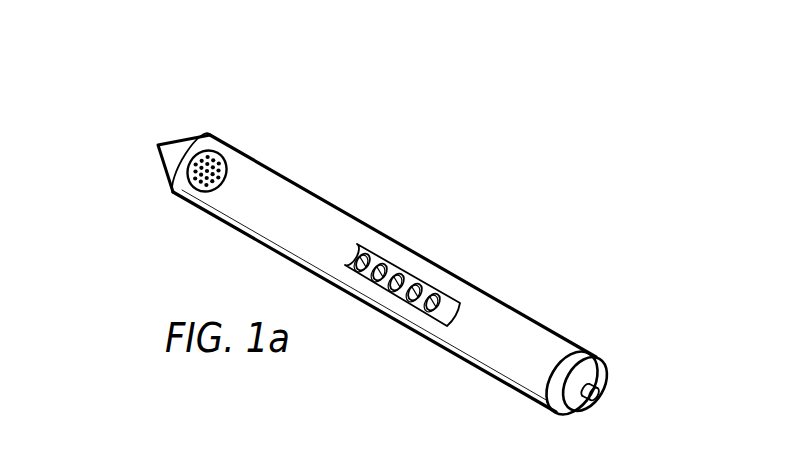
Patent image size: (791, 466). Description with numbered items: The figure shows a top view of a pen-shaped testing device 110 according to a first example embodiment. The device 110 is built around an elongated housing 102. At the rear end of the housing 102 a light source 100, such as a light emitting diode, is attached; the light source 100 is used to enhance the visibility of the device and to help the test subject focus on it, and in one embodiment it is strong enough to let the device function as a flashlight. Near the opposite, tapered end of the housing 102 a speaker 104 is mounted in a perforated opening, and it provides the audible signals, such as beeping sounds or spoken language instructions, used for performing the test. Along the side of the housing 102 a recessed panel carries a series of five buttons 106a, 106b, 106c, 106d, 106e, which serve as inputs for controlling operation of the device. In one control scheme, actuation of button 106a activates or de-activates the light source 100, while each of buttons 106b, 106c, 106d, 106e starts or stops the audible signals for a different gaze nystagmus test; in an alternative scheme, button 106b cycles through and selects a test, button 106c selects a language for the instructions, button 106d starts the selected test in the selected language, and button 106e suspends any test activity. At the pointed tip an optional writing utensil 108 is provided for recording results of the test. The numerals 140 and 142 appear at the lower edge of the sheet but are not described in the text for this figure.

The light source 100 is at (600, 395).
The housing 102 is at (458, 277).
The speaker 104 is at (213, 157).
The button 106a is at (432, 298).
The button 106b is at (412, 288).
The button 106c is at (393, 278).
The button 106d is at (375, 267).
The button 106e is at (358, 257).
The writing utensil 108 is at (157, 143).
The device 110 is at (577, 104).
The component (adjacent figure) 140 is at (126, 462).
The component (adjacent figure) 142 is at (54, 455).